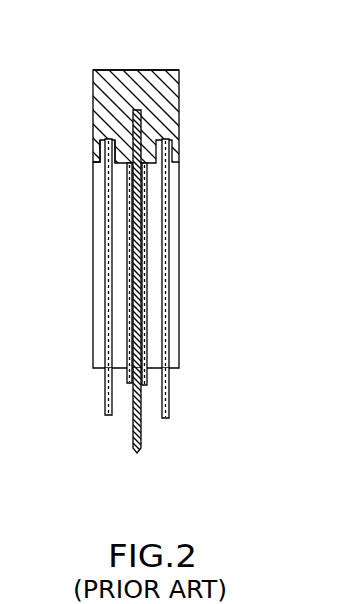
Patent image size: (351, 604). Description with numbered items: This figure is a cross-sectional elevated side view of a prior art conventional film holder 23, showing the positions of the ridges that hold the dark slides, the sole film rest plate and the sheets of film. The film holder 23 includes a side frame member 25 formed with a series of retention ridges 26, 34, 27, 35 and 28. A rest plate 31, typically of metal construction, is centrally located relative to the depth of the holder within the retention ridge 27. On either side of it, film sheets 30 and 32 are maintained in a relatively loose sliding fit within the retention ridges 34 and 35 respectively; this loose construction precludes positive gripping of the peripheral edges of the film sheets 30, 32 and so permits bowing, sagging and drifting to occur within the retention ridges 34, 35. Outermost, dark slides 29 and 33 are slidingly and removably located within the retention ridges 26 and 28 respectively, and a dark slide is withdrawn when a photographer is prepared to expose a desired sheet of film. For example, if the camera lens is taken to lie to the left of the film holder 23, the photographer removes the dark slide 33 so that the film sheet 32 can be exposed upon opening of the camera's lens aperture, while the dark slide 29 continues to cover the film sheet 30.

The film holder 23 is at (162, 69).
The side frame member 25 is at (162, 98).
The retention ridge 26 is at (170, 152).
The retention ridge 27 is at (120, 70).
The retention ridge 28 is at (103, 141).
The dark slide 29 is at (174, 232).
The film sheet 30 is at (148, 287).
The rest plate 31 is at (143, 432).
The film sheet 32 is at (133, 383).
The dark slide 33 is at (108, 392).
The retention ridge 34 is at (141, 134).
The retention ridge 35 is at (107, 174).